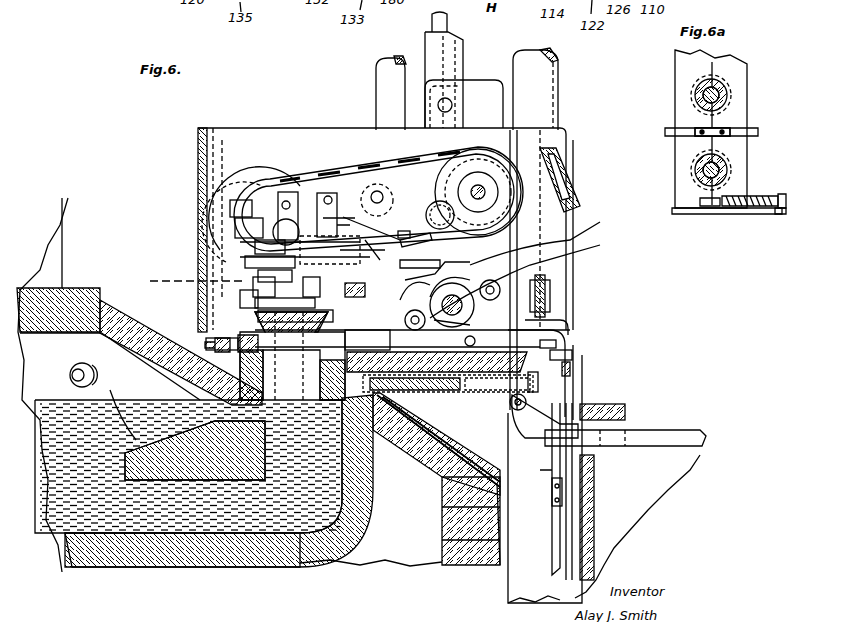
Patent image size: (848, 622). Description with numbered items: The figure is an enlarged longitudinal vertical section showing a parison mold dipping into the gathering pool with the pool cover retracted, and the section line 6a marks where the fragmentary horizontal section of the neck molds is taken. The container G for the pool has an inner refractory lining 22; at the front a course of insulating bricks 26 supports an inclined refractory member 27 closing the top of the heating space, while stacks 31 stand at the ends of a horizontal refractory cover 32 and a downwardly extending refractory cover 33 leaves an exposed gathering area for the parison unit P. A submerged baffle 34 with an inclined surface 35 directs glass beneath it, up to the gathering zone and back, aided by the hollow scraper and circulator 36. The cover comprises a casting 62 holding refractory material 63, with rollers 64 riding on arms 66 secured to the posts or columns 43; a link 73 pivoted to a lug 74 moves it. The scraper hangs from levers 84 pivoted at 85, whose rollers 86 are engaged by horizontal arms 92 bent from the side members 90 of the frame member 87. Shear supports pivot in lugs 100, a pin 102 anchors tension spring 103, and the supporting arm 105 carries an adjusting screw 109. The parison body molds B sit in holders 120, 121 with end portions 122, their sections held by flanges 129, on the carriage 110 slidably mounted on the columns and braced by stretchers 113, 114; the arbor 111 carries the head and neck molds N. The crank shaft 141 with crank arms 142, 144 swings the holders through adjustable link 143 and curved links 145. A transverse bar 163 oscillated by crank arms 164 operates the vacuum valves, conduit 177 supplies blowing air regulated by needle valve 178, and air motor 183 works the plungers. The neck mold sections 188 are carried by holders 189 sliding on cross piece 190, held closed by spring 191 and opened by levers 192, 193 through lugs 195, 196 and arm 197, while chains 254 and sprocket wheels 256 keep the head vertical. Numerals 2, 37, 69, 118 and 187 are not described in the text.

In FIG. 6, the standard 2 is at (478, 188).
In FIG. 6, the inner refractory lining 22 is at (190, 568).
In FIG. 6, the insulating bricks 26 is at (462, 565).
In FIG. 6, the inclined refractory member 27 is at (438, 475).
In FIG. 6, the stacks 31 is at (55, 262).
In FIG. 6, the horizontal refractory cover 32 is at (72, 300).
In FIG. 6, the refractory member or cover 33 is at (130, 352).
In FIG. 6, the submerged baffle 34 is at (232, 460).
In FIG. 6, the inclined surface 35 is at (122, 407).
In FIG. 6, the scraper and circulator 36 is at (375, 440).
In FIG. 6, the roller 37 is at (70, 375).
In FIG. 6, the posts or columns 43 is at (548, 70).
In FIG. 6, the casting 62 is at (452, 392).
In FIG. 6, the refractory material 63 is at (440, 372).
In FIG. 6, the rollers 64 is at (367, 340).
In FIG. 6, the arms 66 is at (430, 440).
In FIG. 6, the lever 69 is at (437, 274).
In FIG. 6, the link 73 is at (660, 438).
In FIG. 6, the lug 74 is at (530, 396).
In FIG. 6, the levers 84 is at (545, 295).
In FIG. 6, the pivot 85 is at (500, 333).
In FIG. 6, the rollers 86 is at (540, 320).
In FIG. 6, the frame member 87 is at (575, 500).
In FIG. 6, the side members 90 is at (570, 522).
In FIG. 6, the horizontal arms 92 is at (526, 276).
In FIG. 6, the lugs 100 is at (478, 390).
In FIG. 6, the pin 102 is at (556, 344).
In FIG. 6, the tension spring 103 is at (572, 354).
In FIG. 6, the supporting arm 105 is at (525, 392).
In FIG. 6, the adjusting screw 109 is at (570, 366).
In FIG. 6, the ram or carriage 110 is at (568, 108).
In FIG. 6, the arbor 111 is at (580, 196).
In FIG. 6, the transverse stretcher 113 is at (505, 285).
In FIG. 6, the transverse stretcher 114 is at (198, 143).
In FIG. 6, the post 118 is at (385, 80).
In FIG. 6, the parison body mold holder 120 is at (180, 346).
In FIG. 6, the parison body mold holder 121 is at (360, 490).
In FIG. 6, the upwardly extending end portions 122 is at (185, 318).
In FIG. 6, the flanges 129 is at (295, 356).
In FIG. 6, the crank shaft 141 is at (440, 320).
In FIG. 6, the crank arms 142 is at (452, 284).
In FIG. 6, the adjustable link 143 is at (448, 305).
In FIG. 6, the crank arms 144 is at (500, 282).
In FIG. 6, the curved links 145 is at (549, 237).
In FIG. 6, the transverse bar 163 is at (418, 236).
In FIG. 6, the crank arms 164 is at (416, 240).
In FIG. 6, the conduit 177 is at (340, 160).
In FIG. 6, the needle valve 178 is at (428, 216).
In FIG. 6, the air motor 183 is at (235, 225).
In FIG. 6, the disc 187 is at (238, 195).
In FIG. 6, the divided sections 188 is at (250, 288).
In FIG. 6A, the divided sections 188 is at (728, 80).
In FIG. 6, the holders 189 is at (258, 274).
In FIG. 6A, the holders 189 is at (682, 86).
In FIG. 6, the cross piece 190 is at (380, 270).
In FIG. 6A, the cross piece 190 is at (750, 128).
In FIG. 6A, the spring 191 is at (752, 196).
In FIG. 6, the lever 192 is at (245, 260).
In FIG. 6A, the lever 192 is at (738, 214).
In FIG. 6, the lever 193 is at (255, 244).
In FIG. 6A, the lever 193 is at (692, 214).
In FIG. 6, the lug 195 is at (284, 192).
In FIG. 6, the lug 196 is at (318, 200).
In FIG. 6, the arm 197 is at (395, 231).
In FIG. 6A, the arm 197 is at (780, 214).
In FIG. 6, the chains 254 is at (390, 168).
In FIG. 6, the sprocket wheels 256 is at (495, 152).
In FIG. 6, the parison unit P is at (242, 140).
In FIG. 6, the neck molds N is at (258, 312).
In FIG. 6, the parison body molds B is at (238, 338).
In FIG. 6, the container G is at (128, 581).
In FIG. 6, the section line 6a— 6a is at (164, 275).